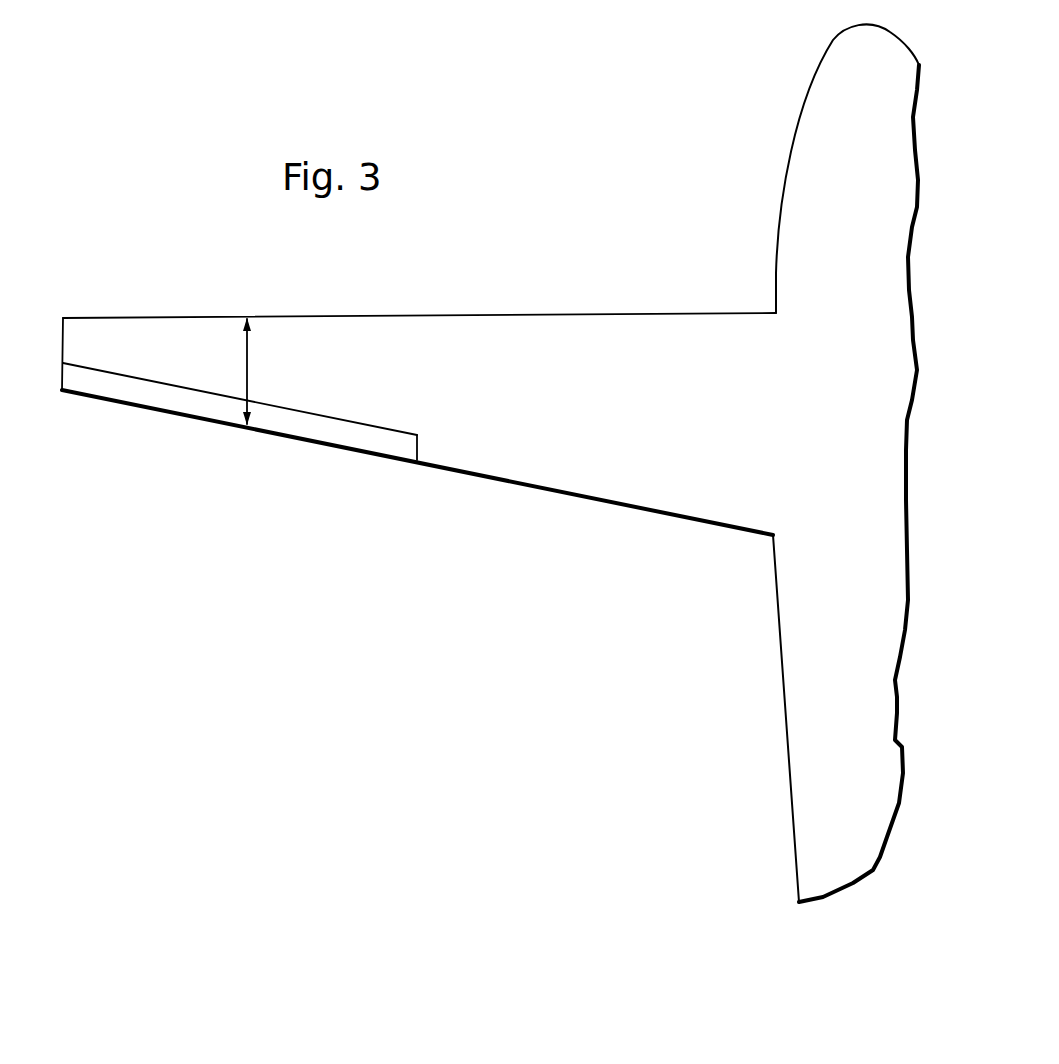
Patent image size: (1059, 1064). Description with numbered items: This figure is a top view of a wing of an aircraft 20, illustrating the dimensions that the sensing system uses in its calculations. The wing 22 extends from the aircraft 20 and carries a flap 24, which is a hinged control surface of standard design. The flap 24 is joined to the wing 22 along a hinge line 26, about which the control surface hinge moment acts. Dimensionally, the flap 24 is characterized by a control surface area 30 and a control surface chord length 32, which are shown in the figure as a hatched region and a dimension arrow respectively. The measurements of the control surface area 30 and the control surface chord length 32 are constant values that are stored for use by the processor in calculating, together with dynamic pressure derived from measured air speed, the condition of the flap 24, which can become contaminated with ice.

The aircraft 20 is at (740, 139).
The wing 22 is at (514, 374).
The flap 24 is at (353, 441).
The hinge line 26 is at (180, 388).
The control surface area 30 is at (203, 416).
The control surface chord length 32 is at (247, 371).